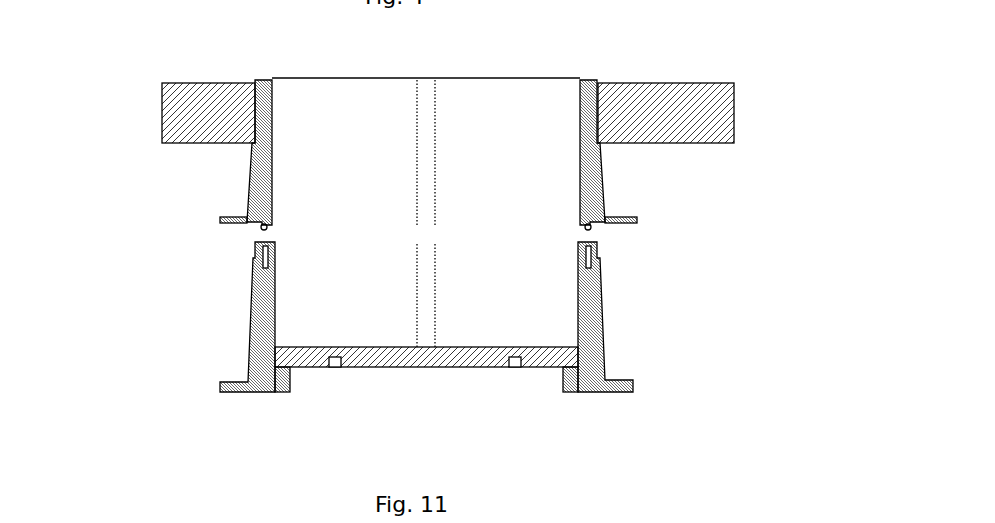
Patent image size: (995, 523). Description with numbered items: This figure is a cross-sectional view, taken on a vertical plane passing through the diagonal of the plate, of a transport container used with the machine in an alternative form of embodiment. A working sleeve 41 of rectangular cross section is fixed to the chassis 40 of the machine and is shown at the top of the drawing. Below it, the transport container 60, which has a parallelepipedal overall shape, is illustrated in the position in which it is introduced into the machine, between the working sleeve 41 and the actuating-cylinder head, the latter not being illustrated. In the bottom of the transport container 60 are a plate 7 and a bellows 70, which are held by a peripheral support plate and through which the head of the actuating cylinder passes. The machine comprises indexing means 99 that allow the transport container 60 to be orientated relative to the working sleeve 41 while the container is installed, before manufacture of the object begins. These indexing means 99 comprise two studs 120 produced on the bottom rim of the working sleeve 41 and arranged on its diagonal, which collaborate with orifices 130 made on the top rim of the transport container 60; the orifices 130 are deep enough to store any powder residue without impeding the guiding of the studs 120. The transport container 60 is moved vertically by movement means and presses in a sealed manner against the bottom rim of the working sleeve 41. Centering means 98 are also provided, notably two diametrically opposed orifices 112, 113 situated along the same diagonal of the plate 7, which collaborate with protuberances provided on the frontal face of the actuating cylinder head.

The chassis 40 is at (642, 115).
The working sleeve 41 is at (583, 118).
The studs 120 is at (262, 225).
The indexing means 99 is at (652, 249).
The transport container 60 is at (610, 323).
The orifices 130 is at (263, 268).
The plate 7 is at (568, 358).
The orifice 112 is at (335, 369).
The orifice 113 is at (515, 368).
The bellows 70 is at (572, 386).
The centering means 98 is at (363, 405).